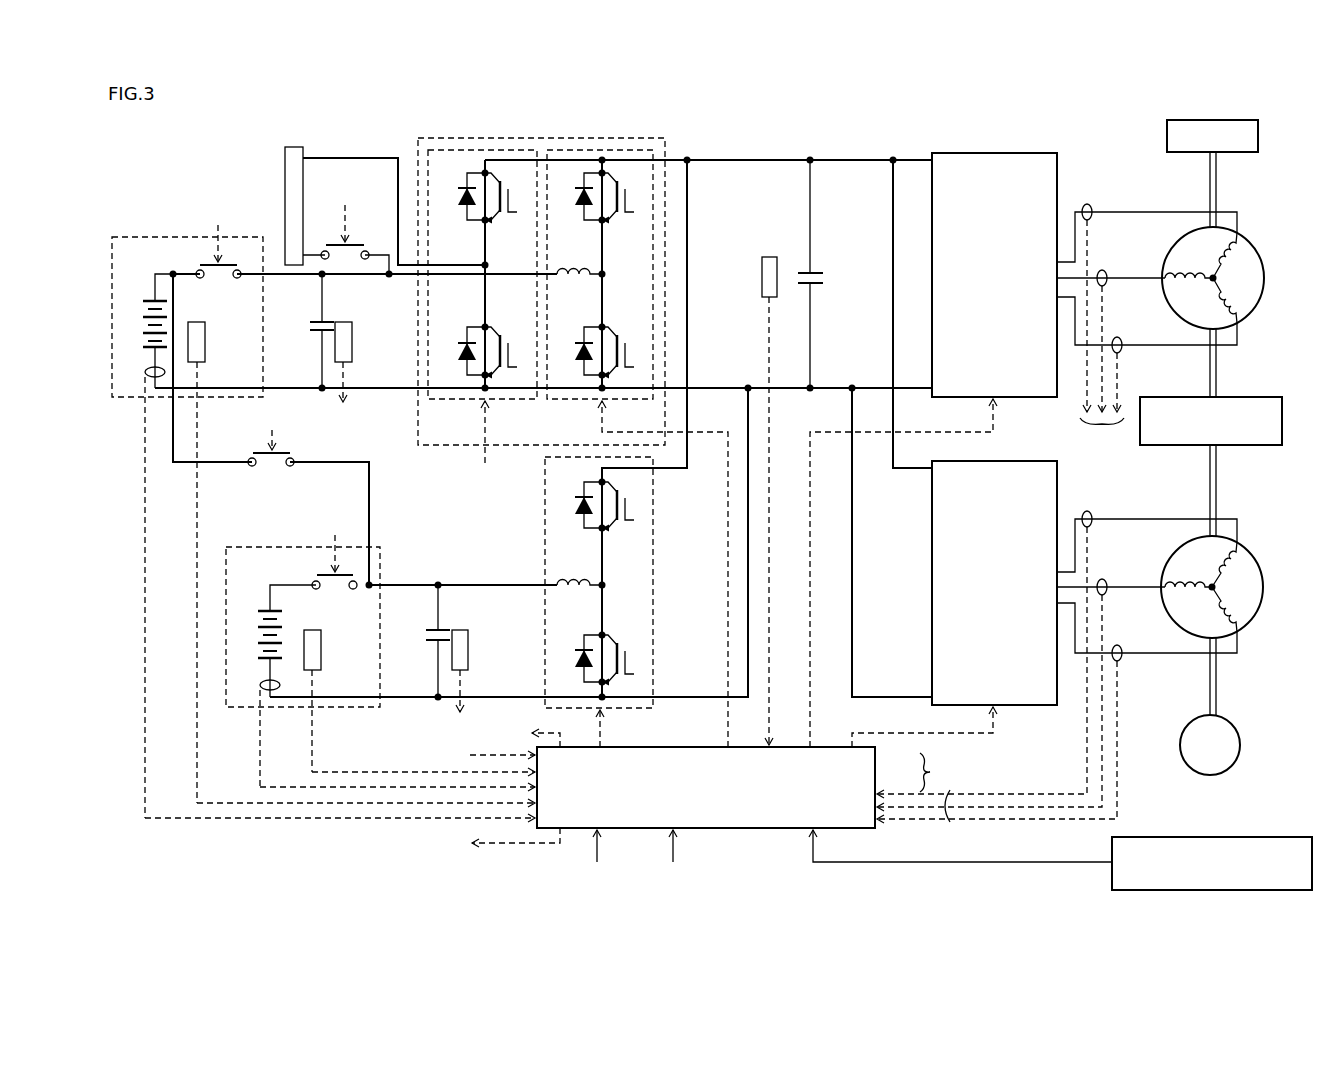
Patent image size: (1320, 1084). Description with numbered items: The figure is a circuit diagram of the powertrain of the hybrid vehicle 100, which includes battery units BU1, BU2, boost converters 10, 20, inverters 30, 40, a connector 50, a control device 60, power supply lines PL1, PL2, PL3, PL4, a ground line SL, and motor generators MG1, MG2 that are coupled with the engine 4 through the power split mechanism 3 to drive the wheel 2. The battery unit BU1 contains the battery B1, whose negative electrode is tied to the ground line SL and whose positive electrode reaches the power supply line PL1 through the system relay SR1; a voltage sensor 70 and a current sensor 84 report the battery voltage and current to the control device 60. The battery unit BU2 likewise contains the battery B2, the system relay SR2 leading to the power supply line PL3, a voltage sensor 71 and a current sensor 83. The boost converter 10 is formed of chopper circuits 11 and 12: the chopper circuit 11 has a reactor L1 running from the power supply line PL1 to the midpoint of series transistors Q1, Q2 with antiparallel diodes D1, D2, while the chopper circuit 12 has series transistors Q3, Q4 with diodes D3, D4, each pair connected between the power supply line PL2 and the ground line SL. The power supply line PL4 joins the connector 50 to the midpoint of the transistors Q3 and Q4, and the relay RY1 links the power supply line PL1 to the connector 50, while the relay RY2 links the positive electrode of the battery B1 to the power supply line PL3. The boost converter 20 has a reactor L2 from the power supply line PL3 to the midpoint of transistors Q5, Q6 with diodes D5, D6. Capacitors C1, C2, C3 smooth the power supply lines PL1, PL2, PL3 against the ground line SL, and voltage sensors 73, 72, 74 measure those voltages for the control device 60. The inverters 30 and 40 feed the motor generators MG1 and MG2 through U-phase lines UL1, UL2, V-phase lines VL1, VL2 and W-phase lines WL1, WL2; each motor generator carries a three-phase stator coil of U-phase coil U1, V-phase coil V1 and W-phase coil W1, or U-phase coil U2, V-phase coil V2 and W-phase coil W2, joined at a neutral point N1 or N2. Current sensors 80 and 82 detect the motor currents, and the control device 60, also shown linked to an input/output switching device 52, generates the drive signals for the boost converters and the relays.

The hybrid vehicle 100 is at (163, 145).
The connector 50 is at (293, 146).
The boost converter 10 is at (616, 138).
The chopper circuit 11 is at (568, 400).
The chopper circuit 12 is at (447, 400).
The boost converter 20 is at (655, 586).
The inverter 30 is at (1027, 153).
The inverter 40 is at (1025, 459).
The control device 60 is at (765, 830).
The input/output switching device 52 is at (1262, 837).
The voltage sensor 70 is at (196, 321).
The voltage sensor 71 is at (312, 630).
The voltage sensor 72 is at (768, 256).
The voltage sensor 73 is at (343, 321).
The voltage sensor 74 is at (461, 630).
The current sensor 80 is at (1092, 206).
The current sensor 82 is at (1092, 512).
The current sensor 83 is at (262, 682).
The current sensor 84 is at (150, 368).
The wheel 2 is at (1242, 745).
The power split mechanism 3 is at (1262, 397).
The engine 4 is at (1258, 135).
The battery unit BU1 is at (136, 237).
The battery unit BU2 is at (252, 545).
The battery B1 is at (148, 296).
The battery B2 is at (264, 608).
The system relay SR1 is at (232, 282).
The system relay SR2 is at (337, 598).
The relay RY1 is at (354, 244).
The relay RY2 is at (272, 468).
The capacitor C1 is at (319, 320).
The capacitor C2 is at (816, 270).
The capacitor C3 is at (434, 627).
The reactor L1 is at (560, 270).
The reactor L2 is at (560, 582).
The npn-type transistor Q1 is at (626, 218).
The npn-type transistor Q2 is at (626, 330).
The npn-type transistor Q3 is at (508, 218).
The npn-type transistor Q4 is at (508, 330).
The npn-type transistor Q5 is at (626, 526).
The npn-type transistor Q6 is at (626, 638).
The diode D1 is at (580, 212).
The diode D2 is at (578, 340).
The diode D3 is at (462, 212).
The diode D4 is at (460, 340).
The diode D5 is at (580, 520).
The diode D6 is at (578, 648).
The power supply line PL1 is at (383, 278).
The power supply line PL2 is at (828, 158).
The power supply line PL3 is at (461, 583).
The power supply line PL4 is at (356, 157).
The ground line SL is at (384, 390).
The motor generator MG1 is at (1233, 303).
The motor generator MG2 is at (1232, 612).
The U-phase line UL1 is at (1232, 210).
The V-phase line VL1 is at (1154, 275).
The W-phase line WL1 is at (1224, 350).
The U-phase line UL2 is at (1232, 518).
The V-phase line VL2 is at (1154, 583).
The W-phase line WL2 is at (1224, 657).
The U-phase coil U1 is at (1238, 255).
The V-phase coil V1 is at (1189, 264).
The W-phase coil W1 is at (1216, 300).
The neutral point N1 is at (1211, 280).
The U-phase coil U2 is at (1237, 564).
The V-phase coil V2 is at (1188, 573).
The W-phase coil W2 is at (1216, 609).
The neutral point N2 is at (1211, 587).